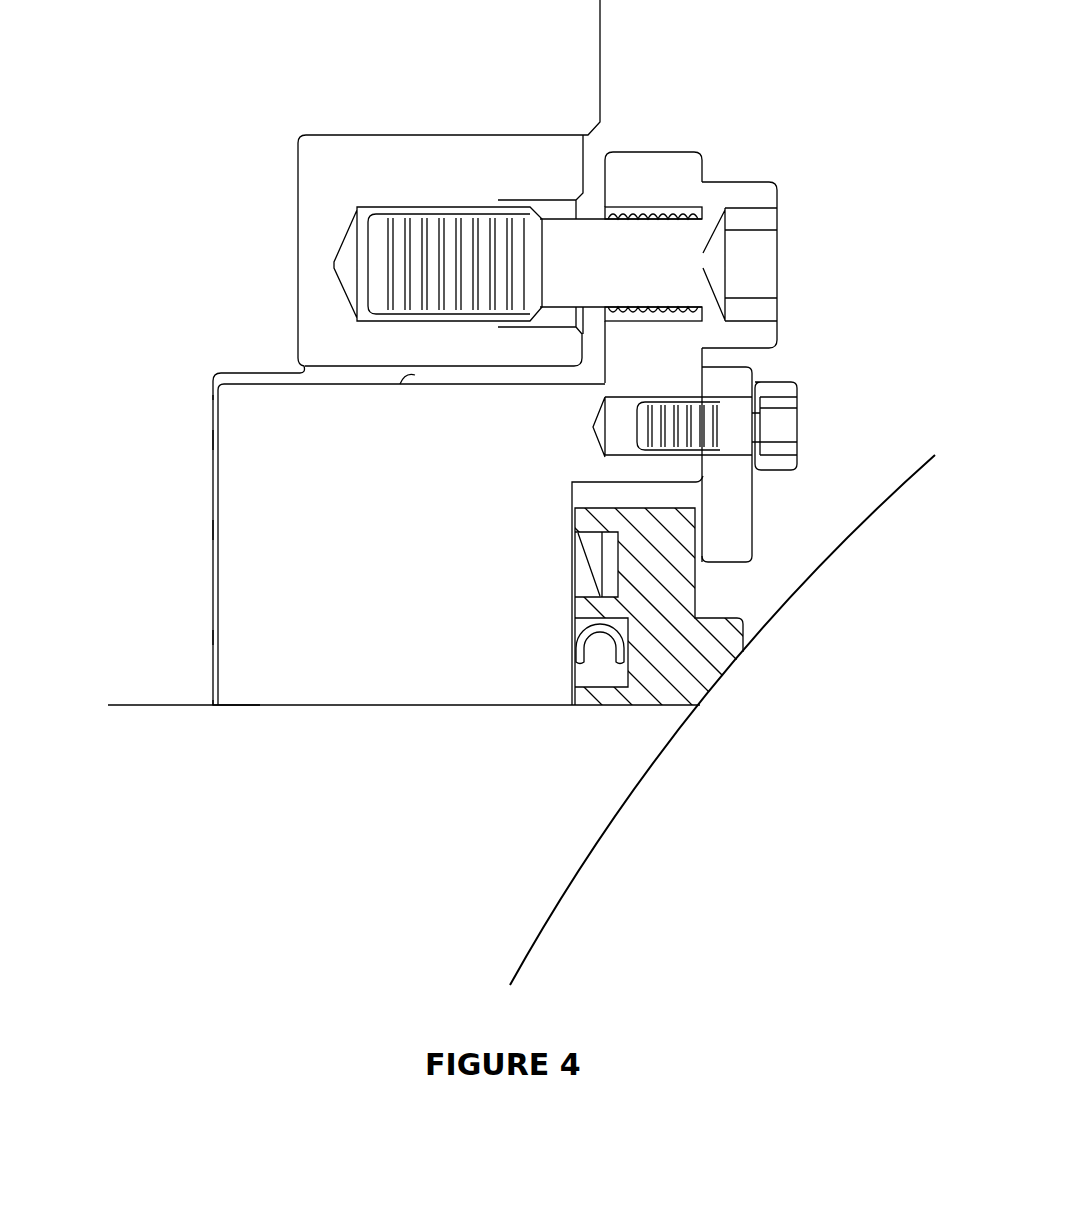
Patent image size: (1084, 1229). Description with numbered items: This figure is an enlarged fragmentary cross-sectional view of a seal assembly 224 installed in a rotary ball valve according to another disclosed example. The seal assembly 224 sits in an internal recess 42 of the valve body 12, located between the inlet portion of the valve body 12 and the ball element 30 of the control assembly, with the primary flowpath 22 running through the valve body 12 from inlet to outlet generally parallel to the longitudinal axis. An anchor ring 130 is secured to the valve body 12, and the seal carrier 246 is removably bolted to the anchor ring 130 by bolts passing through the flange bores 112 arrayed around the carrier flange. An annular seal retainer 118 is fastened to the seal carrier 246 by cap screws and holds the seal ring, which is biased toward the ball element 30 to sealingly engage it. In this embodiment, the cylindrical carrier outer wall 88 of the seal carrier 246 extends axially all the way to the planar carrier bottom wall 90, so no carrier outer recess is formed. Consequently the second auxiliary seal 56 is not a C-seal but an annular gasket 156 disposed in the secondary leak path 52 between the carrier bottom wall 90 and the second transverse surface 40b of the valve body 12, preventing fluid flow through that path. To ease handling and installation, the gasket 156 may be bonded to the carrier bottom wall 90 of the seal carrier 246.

The valve body 12 is at (128, 608).
The primary flowpath 22 is at (198, 870).
The ball element 30 is at (614, 792).
The second transverse surface 40b is at (213, 638).
The internal recess 42 is at (378, 730).
The secondary leak path 52 is at (250, 678).
The second auxiliary seal 56 is at (206, 440).
The carrier outer wall 88 is at (416, 386).
The carrier bottom wall 90 is at (213, 528).
The flange bore 112 is at (659, 205).
The seal retainer 118 is at (726, 546).
The anchor ring 130 is at (448, 190).
The annular gasket 156 is at (212, 397).
The seal assembly 224 is at (748, 98).
The seal carrier 246 is at (407, 543).